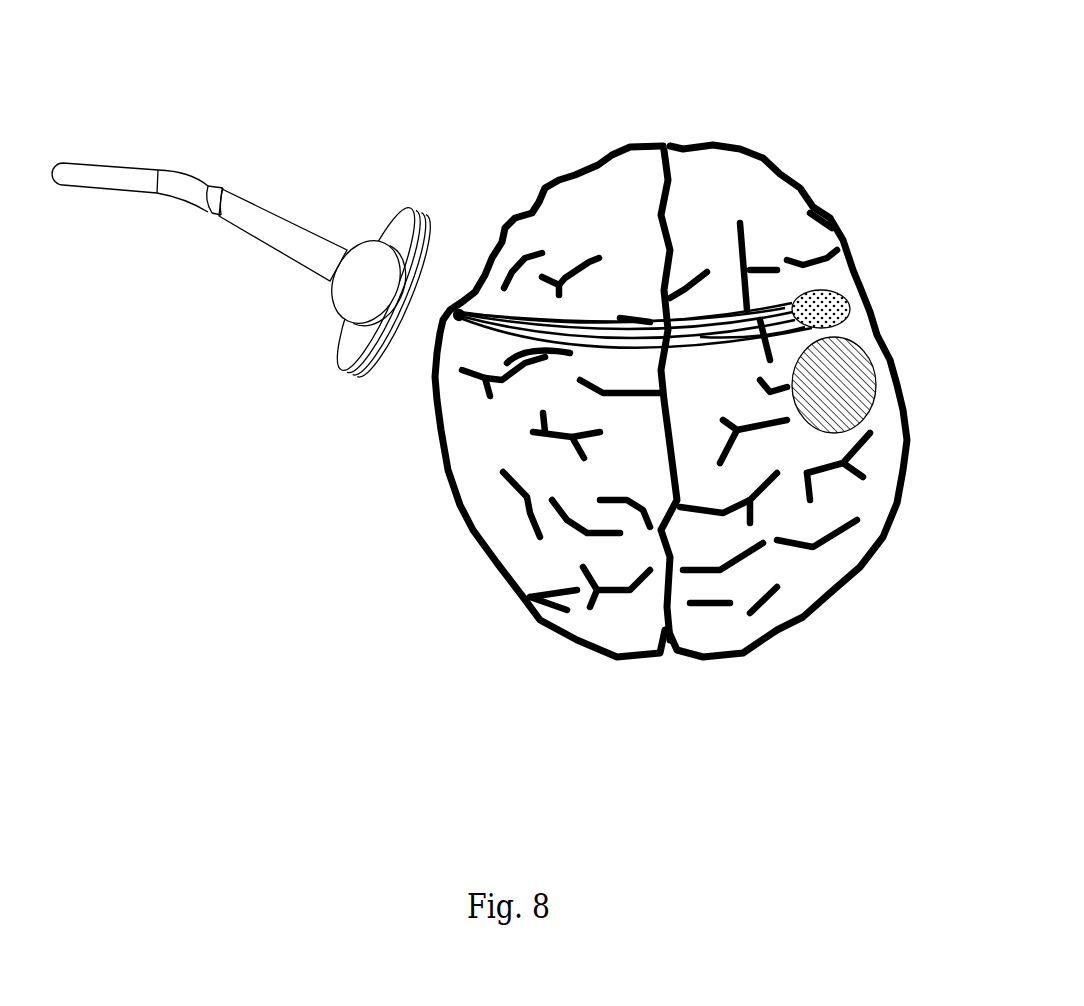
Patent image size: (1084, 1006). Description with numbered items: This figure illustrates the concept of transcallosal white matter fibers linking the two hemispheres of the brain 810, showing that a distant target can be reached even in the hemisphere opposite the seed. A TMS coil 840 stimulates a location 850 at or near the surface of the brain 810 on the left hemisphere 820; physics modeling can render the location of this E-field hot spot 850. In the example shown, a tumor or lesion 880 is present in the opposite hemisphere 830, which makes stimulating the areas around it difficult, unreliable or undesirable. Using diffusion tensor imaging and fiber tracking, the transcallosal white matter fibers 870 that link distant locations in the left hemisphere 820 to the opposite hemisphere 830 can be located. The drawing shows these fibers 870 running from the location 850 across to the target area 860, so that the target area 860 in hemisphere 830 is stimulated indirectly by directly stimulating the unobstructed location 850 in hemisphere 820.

The brain 810 is at (627, 126).
The left hemisphere 820 is at (607, 214).
The opposite hemisphere 830 is at (736, 206).
The TMS coil 840 is at (218, 146).
The location 850 is at (449, 337).
The target area 860 is at (840, 298).
The neural fiber tract 870 is at (568, 360).
The tumor or lesion 880 is at (872, 375).